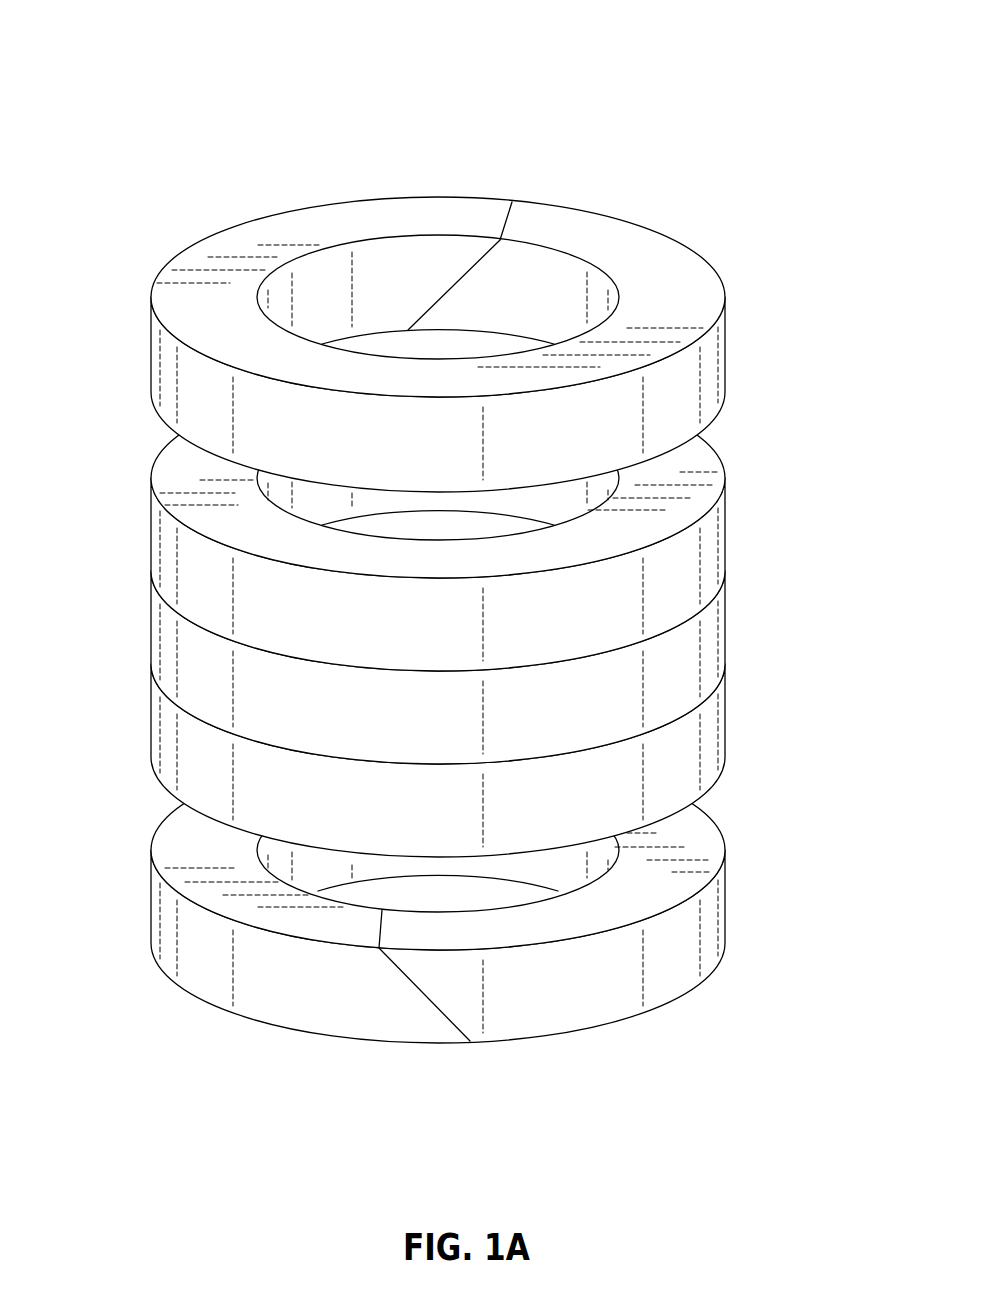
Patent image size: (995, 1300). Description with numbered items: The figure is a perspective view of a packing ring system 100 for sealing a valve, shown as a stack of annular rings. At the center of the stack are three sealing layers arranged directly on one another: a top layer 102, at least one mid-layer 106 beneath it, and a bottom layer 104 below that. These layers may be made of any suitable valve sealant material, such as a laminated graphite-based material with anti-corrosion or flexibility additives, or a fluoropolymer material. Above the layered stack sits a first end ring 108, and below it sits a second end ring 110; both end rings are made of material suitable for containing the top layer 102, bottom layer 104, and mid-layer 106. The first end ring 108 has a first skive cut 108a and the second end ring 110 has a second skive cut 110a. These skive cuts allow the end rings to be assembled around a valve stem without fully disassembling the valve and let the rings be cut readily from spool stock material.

The packing ring system 100 is at (448, 542).
The top layer 102 is at (708, 552).
The bottom layer 104 is at (708, 745).
The mid-layer 106 is at (708, 653).
The first end ring 108 is at (708, 362).
The first skive cut 108a is at (460, 278).
The second end ring 110 is at (708, 925).
The second skive cut 110a is at (440, 1008).